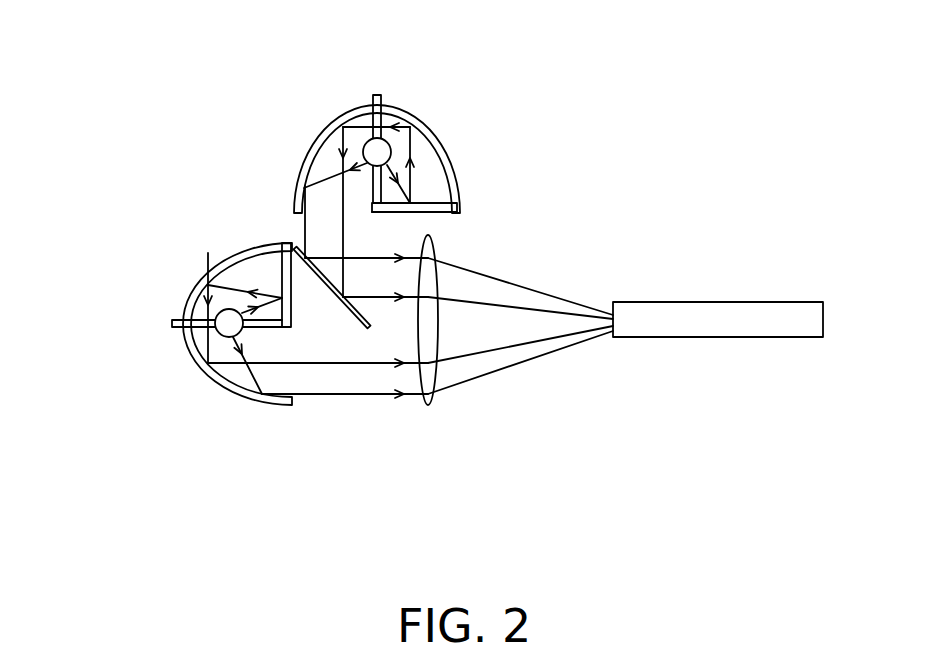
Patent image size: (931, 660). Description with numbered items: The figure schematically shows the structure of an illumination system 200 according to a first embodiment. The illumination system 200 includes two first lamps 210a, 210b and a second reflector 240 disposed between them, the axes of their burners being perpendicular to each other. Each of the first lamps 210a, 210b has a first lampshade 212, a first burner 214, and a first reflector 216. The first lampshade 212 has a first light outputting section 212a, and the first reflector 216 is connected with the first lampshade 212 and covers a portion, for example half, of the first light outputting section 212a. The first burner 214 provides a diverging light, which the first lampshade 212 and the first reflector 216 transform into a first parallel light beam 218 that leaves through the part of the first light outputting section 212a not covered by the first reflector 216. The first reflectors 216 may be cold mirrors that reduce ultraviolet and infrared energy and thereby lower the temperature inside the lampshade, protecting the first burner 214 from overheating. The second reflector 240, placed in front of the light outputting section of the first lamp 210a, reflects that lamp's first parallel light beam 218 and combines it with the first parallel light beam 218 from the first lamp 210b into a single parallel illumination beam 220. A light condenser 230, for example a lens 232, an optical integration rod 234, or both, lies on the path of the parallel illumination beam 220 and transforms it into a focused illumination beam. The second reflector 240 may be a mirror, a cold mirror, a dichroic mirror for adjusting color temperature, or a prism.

The illumination system 200 is at (490, 563).
The first lamp 210a is at (343, 49).
The first lamp 210b is at (93, 243).
The first lampshade 212 is at (372, 139).
The first light outputting section 212a is at (355, 213).
The first burner 214 is at (357, 114).
The first reflector 216 is at (356, 205).
The first parallel light beam 218 is at (350, 247).
The parallel illumination beam 220 is at (410, 402).
The light condenser 230 is at (602, 450).
The lens 232 is at (440, 368).
The optical integration rod 234 is at (640, 327).
The second reflector 240 is at (296, 244).